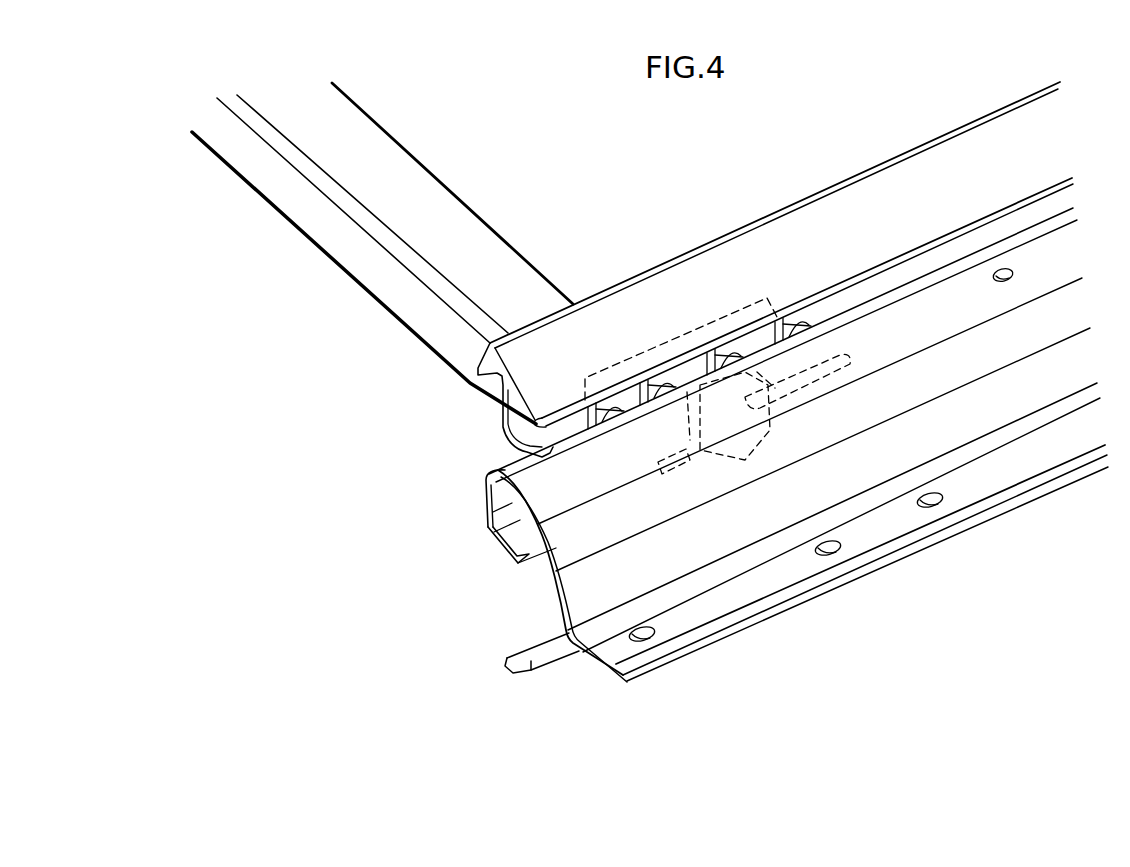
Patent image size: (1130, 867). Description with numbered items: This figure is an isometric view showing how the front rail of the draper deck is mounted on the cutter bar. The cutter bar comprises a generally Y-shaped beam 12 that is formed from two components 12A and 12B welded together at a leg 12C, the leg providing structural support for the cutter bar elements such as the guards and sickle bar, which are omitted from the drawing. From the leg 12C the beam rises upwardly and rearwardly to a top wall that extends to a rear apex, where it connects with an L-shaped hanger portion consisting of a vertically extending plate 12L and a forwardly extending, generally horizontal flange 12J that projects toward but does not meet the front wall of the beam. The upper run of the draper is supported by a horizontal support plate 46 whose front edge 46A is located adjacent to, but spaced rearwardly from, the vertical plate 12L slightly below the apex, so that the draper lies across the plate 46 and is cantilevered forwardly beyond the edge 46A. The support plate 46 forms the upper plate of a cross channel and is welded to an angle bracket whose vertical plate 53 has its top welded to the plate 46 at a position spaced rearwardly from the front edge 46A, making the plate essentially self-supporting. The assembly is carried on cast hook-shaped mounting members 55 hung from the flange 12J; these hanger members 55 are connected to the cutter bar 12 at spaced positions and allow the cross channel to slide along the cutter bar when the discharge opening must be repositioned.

The beam 12 is at (749, 459).
The component 12A is at (588, 583).
The component 12B is at (527, 662).
The leg 12C is at (795, 577).
The horizontal flange 12J is at (508, 555).
The vertical plate 12L is at (473, 527).
The support plate 46 is at (776, 232).
The front edge 46A is at (843, 278).
The vertical plate 53 is at (934, 332).
The hook-shaped mounting member 55 is at (795, 476).